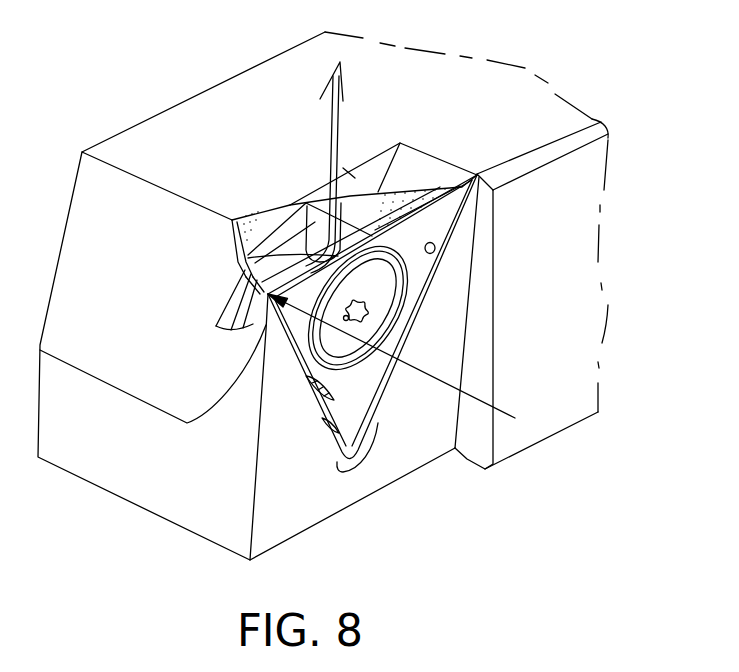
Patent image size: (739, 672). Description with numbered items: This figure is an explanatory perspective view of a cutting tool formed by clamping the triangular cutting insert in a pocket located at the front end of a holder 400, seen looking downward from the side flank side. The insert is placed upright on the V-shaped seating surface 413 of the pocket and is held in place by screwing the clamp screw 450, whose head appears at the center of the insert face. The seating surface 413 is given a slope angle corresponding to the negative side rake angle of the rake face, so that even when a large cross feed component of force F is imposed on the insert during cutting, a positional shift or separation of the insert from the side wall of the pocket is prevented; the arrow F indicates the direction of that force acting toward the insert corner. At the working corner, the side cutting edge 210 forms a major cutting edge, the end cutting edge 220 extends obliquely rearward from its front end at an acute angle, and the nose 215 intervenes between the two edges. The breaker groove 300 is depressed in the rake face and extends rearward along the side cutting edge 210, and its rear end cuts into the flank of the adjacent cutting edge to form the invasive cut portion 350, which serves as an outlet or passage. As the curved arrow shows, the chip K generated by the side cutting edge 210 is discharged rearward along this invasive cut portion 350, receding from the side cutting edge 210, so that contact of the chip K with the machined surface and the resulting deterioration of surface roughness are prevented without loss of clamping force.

The holder 400 is at (253, 71).
The seating surface 413 is at (436, 249).
The side cutting edge 210 is at (262, 278).
The nose 215 is at (258, 291).
The end cutting edge 220 is at (246, 260).
The breaker groove 300 is at (301, 206).
The invasive cut portion 350 is at (343, 168).
The clamp screw 450 is at (382, 323).
The chip K is at (328, 124).
The cross feed component of force F is at (400, 356).